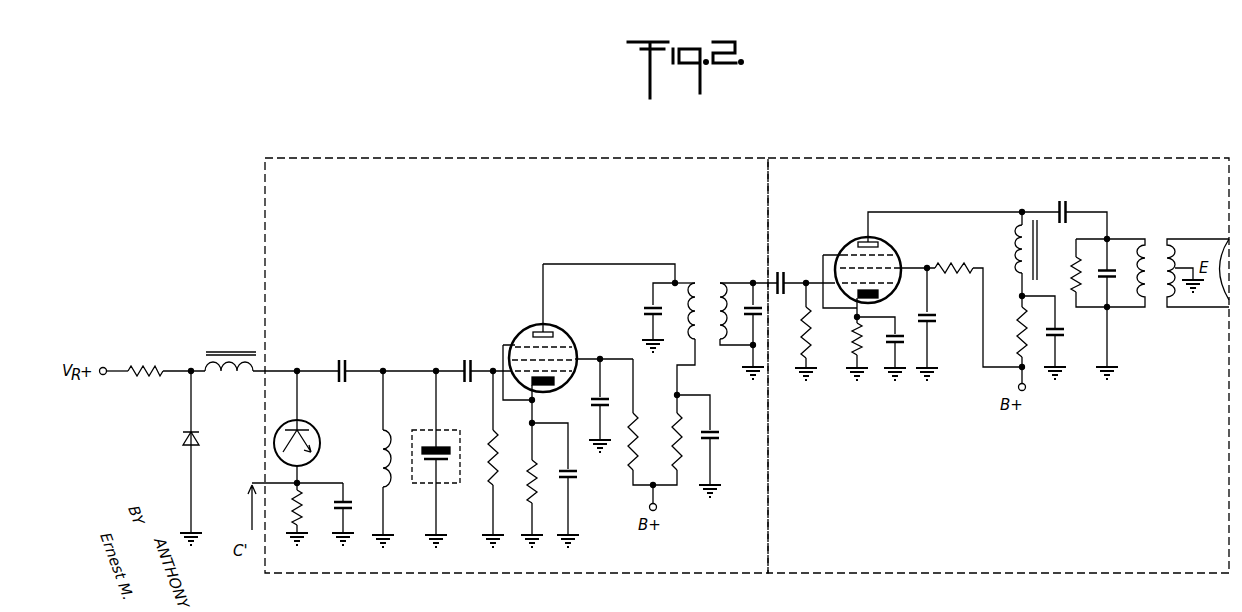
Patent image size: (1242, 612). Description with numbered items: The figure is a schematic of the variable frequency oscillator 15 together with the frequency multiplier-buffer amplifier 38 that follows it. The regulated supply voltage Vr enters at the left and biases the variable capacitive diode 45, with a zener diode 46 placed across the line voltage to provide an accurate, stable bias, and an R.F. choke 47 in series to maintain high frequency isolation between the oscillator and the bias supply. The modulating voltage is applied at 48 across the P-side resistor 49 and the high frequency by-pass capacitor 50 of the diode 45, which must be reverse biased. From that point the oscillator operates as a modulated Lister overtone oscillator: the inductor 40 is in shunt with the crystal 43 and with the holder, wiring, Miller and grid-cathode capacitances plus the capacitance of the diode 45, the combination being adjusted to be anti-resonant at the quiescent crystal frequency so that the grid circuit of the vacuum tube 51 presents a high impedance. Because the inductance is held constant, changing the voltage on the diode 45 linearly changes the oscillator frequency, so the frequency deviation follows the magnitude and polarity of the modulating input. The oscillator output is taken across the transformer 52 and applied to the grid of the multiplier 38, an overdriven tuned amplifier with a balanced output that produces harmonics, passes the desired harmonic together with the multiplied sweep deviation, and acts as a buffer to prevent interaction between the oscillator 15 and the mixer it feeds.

The variable frequency oscillator 15 is at (515, 194).
The frequency multiplier-buffer amplifier 38 is at (1192, 188).
The inductor 40 is at (387, 440).
The crystal 43 is at (442, 445).
The variable capacitive diode 45 is at (318, 440).
The zener diode 46 is at (180, 458).
The R.F. choke 47 is at (230, 348).
The modulating voltage input 48 is at (235, 507).
The P-side resistor 49 is at (289, 514).
The high frequency by-pass capacitor 50 is at (353, 514).
The vacuum tube 51 is at (533, 330).
The transformer 52 is at (718, 277).